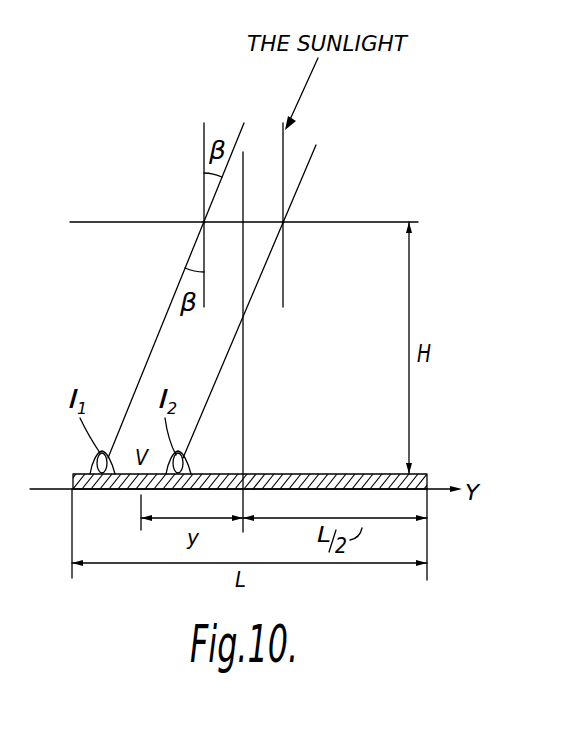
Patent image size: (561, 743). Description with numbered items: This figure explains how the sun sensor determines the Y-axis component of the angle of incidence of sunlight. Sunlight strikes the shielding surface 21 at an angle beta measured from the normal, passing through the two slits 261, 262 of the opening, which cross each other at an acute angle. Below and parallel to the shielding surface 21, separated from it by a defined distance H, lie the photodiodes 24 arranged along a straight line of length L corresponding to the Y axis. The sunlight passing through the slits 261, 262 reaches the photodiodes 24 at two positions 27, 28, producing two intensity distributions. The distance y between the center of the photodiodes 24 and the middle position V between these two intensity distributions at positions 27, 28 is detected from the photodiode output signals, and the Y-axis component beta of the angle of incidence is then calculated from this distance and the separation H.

The shielding surface 21 is at (394, 221).
The photodiodes 24 is at (396, 474).
The first position 27 is at (93, 471).
The second position 28 is at (188, 465).
The first slit 261 is at (203, 221).
The second slit 262 is at (284, 223).